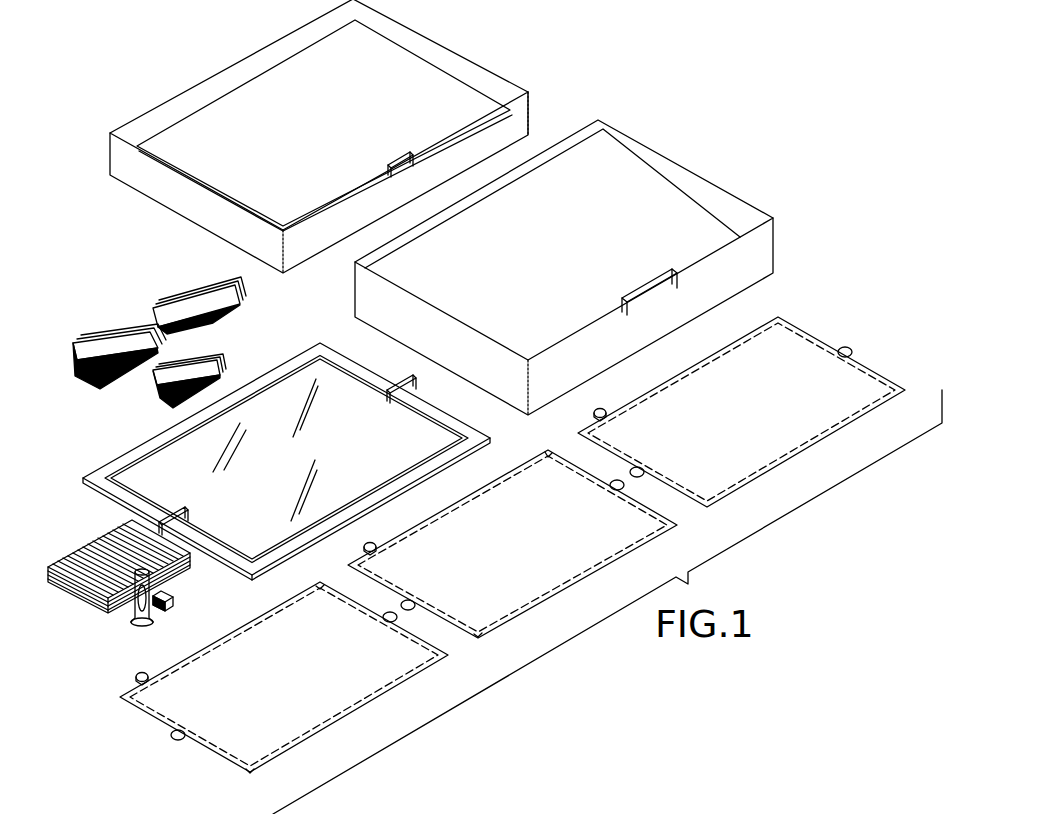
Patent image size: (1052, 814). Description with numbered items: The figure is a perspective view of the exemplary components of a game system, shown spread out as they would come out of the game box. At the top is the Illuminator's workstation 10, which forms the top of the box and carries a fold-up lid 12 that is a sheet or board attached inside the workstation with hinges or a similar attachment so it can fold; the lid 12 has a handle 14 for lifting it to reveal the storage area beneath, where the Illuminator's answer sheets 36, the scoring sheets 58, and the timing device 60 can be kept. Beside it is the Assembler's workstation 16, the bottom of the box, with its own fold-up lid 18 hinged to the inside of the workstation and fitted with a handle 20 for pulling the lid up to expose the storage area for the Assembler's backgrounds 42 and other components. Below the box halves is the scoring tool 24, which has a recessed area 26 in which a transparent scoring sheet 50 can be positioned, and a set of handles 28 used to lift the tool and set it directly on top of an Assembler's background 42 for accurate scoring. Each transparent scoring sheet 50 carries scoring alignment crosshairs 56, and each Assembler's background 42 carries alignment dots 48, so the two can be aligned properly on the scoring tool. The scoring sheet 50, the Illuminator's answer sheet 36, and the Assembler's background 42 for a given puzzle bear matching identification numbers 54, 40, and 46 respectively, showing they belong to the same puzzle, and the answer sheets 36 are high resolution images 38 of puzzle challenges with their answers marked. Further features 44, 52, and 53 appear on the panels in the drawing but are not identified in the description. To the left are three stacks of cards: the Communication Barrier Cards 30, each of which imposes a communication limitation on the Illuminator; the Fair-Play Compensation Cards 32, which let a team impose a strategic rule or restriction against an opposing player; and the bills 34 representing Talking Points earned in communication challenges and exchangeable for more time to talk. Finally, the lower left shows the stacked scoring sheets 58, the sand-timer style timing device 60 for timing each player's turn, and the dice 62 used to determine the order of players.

The Illuminator's workstation 10 is at (773, 255).
The fold-up lid 12 is at (605, 142).
The handle 14 is at (635, 287).
The Assembler's workstation 16 is at (520, 115).
The fold-up lid 18 is at (436, 57).
The handle 20 is at (398, 152).
The scoring tool 24 is at (128, 458).
The recessed area 26 is at (313, 360).
The handles 28 is at (397, 385).
The Communication Barrier Cards 30 is at (117, 338).
The Fair-Play Compensation Cards 32 is at (188, 308).
The bills 34 is at (163, 400).
The Illuminator's answer sheets 36 is at (797, 340).
The high resolution images 38 is at (880, 362).
The identification number 40 is at (602, 400).
The Assembler's backgrounds 42 is at (502, 487).
The panel border 44 is at (458, 505).
The identification number 46 is at (372, 538).
The alignment dots 48 is at (548, 458).
The transparent scoring sheets 50 is at (273, 620).
The panel border 52 is at (232, 635).
The panel fastener 53 is at (393, 618).
The identification number 54 is at (133, 668).
The scoring alignment crosshairs 56 is at (322, 590).
The scoring sheets 58 is at (105, 537).
The timing device 60 is at (135, 617).
The dice 62 is at (172, 603).